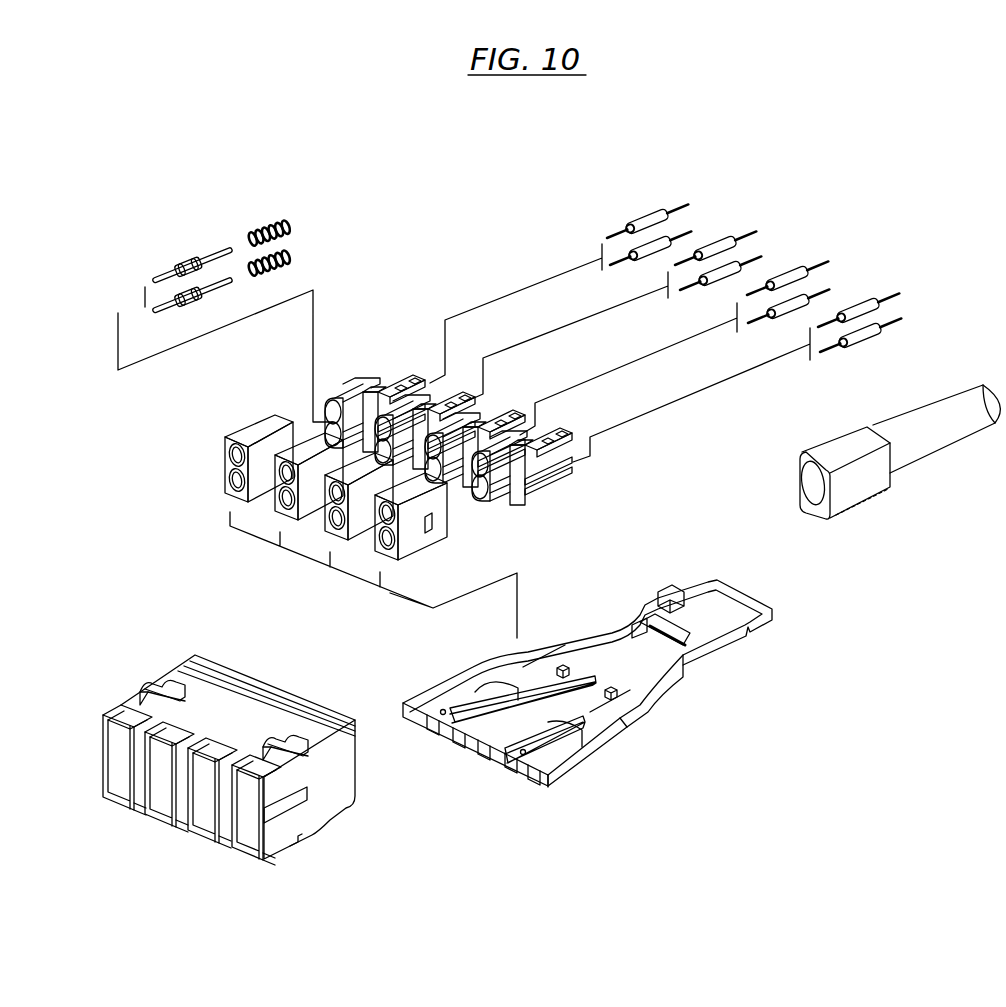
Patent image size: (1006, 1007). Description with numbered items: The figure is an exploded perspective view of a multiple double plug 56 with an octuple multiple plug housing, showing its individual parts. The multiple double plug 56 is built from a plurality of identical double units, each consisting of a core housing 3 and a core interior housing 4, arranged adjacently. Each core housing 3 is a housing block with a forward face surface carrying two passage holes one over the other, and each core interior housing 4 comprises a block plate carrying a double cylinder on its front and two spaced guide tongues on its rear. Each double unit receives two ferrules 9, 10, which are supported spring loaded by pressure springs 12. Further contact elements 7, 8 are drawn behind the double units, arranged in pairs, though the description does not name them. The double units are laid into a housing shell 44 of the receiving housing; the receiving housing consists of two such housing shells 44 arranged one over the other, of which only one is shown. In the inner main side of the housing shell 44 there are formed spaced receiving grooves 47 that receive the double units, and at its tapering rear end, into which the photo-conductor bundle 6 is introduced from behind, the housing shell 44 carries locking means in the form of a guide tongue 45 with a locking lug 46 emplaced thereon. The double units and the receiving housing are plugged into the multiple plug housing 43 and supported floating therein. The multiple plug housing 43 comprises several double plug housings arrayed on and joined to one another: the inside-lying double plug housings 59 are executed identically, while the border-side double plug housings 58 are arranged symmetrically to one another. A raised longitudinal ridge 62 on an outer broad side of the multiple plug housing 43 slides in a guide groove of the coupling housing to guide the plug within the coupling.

The core housing 3 is at (225, 492).
The core interior housing 4 is at (348, 383).
The photo-conductor bundle 6 is at (858, 483).
The wire contact 7 is at (688, 205).
The wire contact 8 is at (690, 233).
The ferrule 9 is at (216, 250).
The ferrule 10 is at (216, 290).
The pressure spring 12 is at (292, 258).
The multiple plug housing 43 is at (232, 765).
The housing shell 44 is at (700, 748).
The guide tongue 45 is at (658, 602).
The locking lug 46 is at (672, 600).
The receiving groove 47 is at (537, 780).
The multiple double plug 56 is at (848, 620).
The border-side double plug housing 58 is at (327, 793).
The inside-lying double plug housing 59 is at (228, 735).
The longitudinal ridge 62 is at (275, 815).